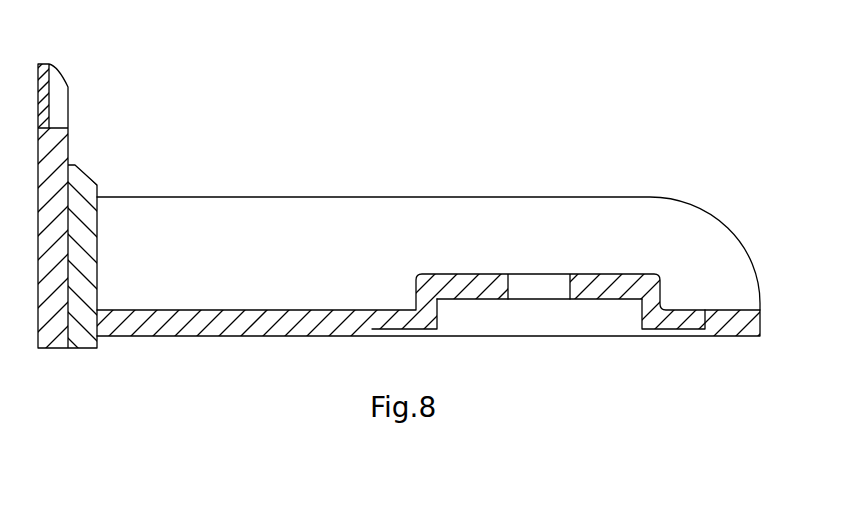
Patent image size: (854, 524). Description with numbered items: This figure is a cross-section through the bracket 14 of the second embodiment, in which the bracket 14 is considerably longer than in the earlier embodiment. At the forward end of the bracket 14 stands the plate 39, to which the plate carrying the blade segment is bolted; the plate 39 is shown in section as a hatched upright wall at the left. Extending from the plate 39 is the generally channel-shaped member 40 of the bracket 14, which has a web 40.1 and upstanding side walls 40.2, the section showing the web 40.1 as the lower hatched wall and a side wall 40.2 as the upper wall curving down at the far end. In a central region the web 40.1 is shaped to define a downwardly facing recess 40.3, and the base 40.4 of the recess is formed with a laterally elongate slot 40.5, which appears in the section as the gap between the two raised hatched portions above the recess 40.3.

The bracket 14 is at (428, 253).
The plate 39 is at (98, 238).
The channel-shaped member 40 is at (428, 364).
The web 40.1 is at (162, 336).
The side wall 40.2 is at (581, 215).
The recess 40.3 is at (560, 313).
The base of the recess 40.4 is at (597, 293).
The slot 40.5 is at (570, 291).